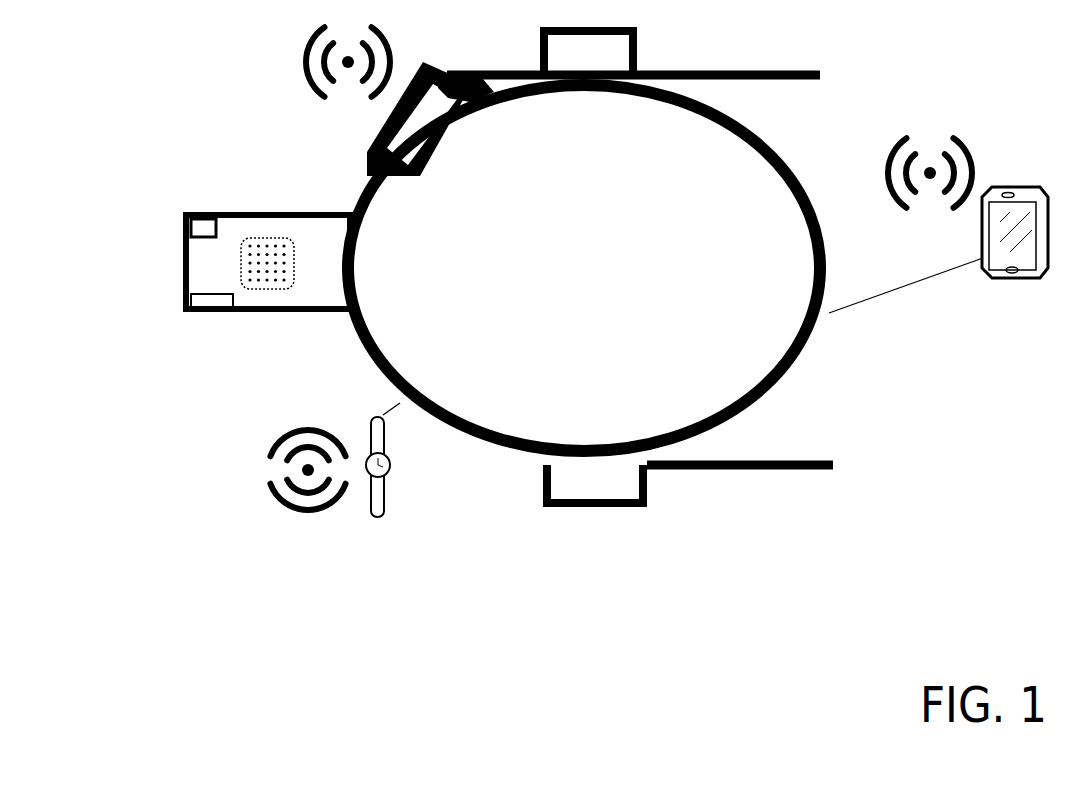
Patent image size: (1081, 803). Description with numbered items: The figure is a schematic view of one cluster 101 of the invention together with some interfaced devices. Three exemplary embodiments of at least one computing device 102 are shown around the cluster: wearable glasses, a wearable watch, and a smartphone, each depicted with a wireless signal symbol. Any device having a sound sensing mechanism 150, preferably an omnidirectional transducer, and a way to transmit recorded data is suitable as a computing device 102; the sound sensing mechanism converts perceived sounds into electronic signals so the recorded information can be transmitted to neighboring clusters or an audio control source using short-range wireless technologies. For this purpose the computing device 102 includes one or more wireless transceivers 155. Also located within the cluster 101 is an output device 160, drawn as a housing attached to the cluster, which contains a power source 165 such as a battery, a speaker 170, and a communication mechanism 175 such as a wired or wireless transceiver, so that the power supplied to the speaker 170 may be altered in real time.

The cluster 101 is at (210, 53).
The computing device 102 is at (546, 321).
The sound sensing mechanism 150 is at (1000, 273).
The wireless transceiver 155 is at (1005, 187).
The output device 160 is at (260, 317).
The power source 165 is at (203, 303).
The speaker 170 is at (273, 252).
The communication mechanism 175 is at (192, 230).